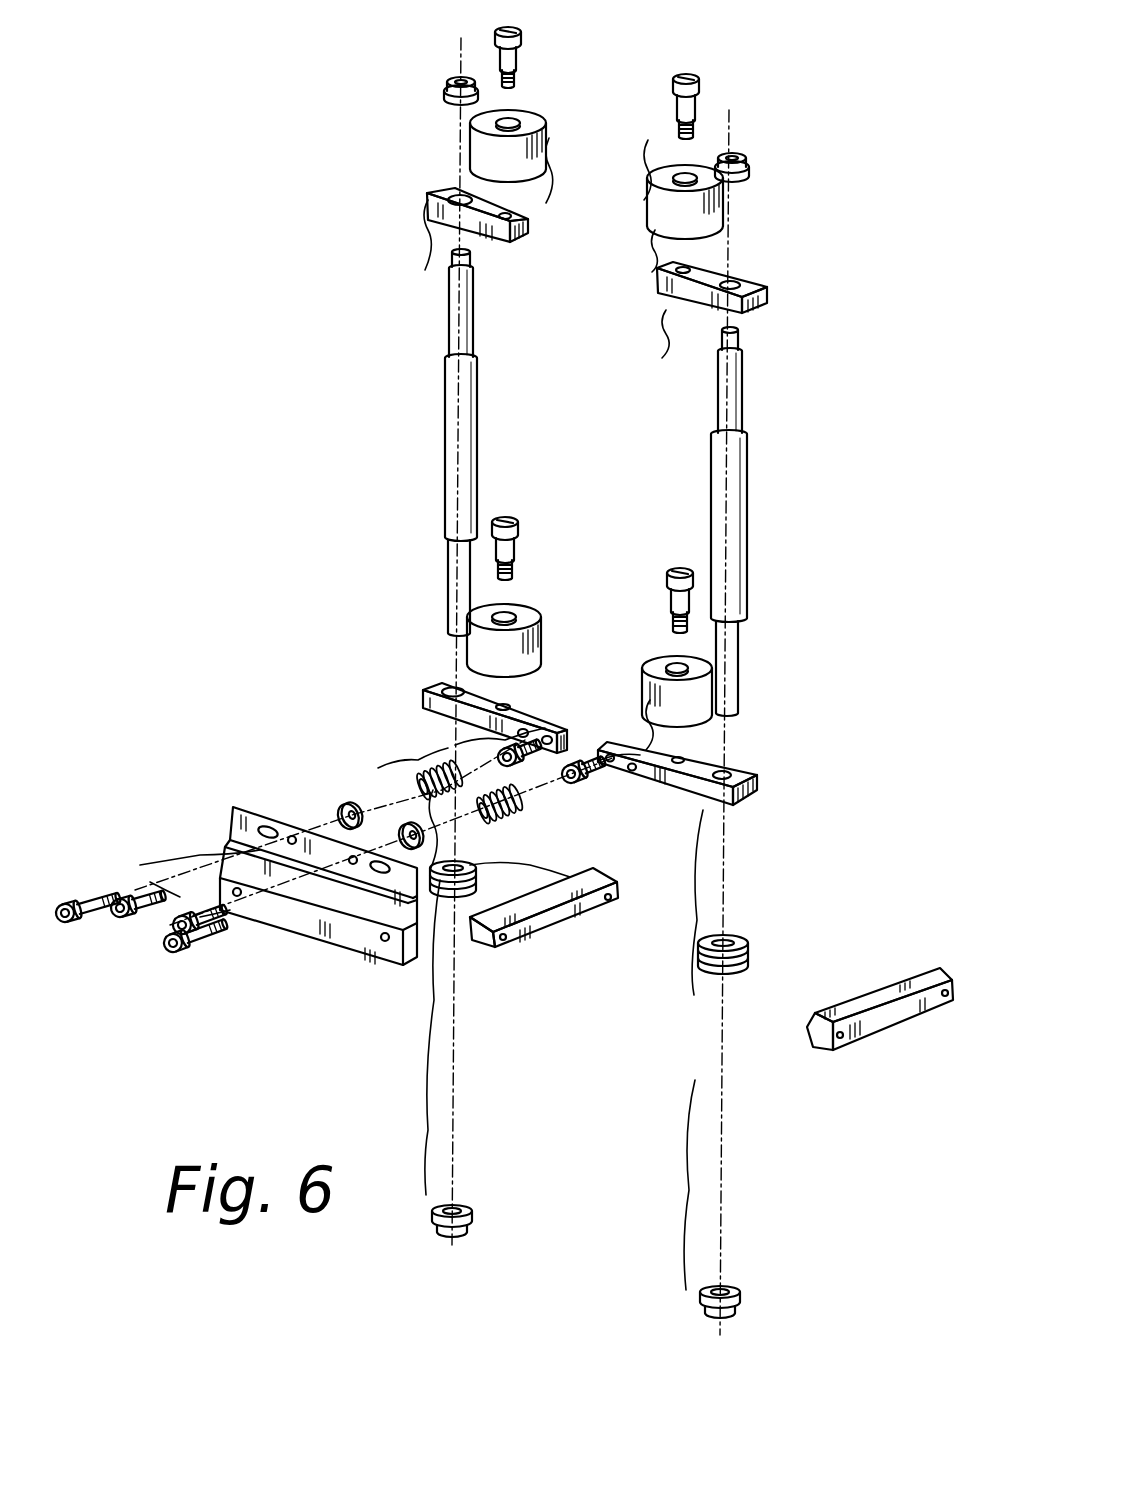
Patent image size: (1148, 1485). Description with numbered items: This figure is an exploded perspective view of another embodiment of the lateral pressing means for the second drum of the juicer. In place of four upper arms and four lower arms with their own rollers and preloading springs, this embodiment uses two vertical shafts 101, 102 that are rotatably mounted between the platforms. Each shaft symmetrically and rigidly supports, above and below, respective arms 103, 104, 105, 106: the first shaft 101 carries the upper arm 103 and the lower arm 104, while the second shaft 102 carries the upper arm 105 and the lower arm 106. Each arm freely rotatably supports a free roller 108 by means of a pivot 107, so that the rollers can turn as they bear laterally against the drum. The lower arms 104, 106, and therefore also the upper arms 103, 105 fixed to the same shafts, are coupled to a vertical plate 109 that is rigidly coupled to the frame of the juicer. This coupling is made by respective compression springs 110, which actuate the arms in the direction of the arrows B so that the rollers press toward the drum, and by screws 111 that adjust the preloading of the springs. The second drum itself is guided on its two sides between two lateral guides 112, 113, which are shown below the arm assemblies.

The vertical shaft 101 is at (446, 441).
The vertical shaft 102 is at (732, 490).
The arm 103 is at (502, 240).
The arm 104 is at (432, 694).
The arm 105 is at (710, 271).
The arm 106 is at (710, 758).
The pivot 107 is at (520, 530).
The free roller 108 is at (547, 133).
The vertical plate 109 is at (347, 950).
The compression spring 110 is at (528, 802).
The screw 111 is at (205, 948).
The lateral guide 112 is at (520, 943).
The lateral guide 113 is at (841, 1010).